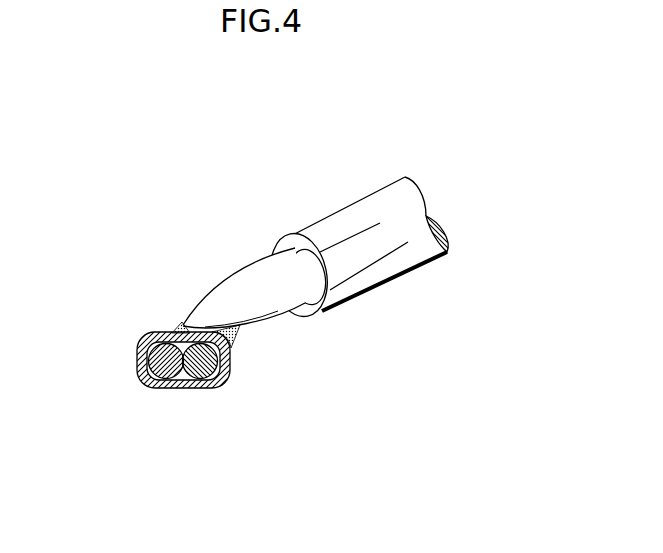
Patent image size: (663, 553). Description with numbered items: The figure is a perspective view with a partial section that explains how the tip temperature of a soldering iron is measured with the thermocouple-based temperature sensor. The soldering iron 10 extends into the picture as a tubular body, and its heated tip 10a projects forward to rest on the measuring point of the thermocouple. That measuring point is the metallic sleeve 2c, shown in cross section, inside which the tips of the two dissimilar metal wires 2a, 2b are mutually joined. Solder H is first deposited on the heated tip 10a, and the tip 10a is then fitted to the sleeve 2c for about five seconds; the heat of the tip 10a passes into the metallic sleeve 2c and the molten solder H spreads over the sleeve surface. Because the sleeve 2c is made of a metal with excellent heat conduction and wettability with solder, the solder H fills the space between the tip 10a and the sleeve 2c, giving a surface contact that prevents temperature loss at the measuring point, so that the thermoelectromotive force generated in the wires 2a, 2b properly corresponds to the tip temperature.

The soldering iron 10 is at (415, 267).
The tip 10a is at (238, 285).
The metallic sleeve 2c is at (138, 360).
The metal wire 2a is at (158, 384).
The metal wire 2b is at (210, 383).
The solder H is at (177, 330).